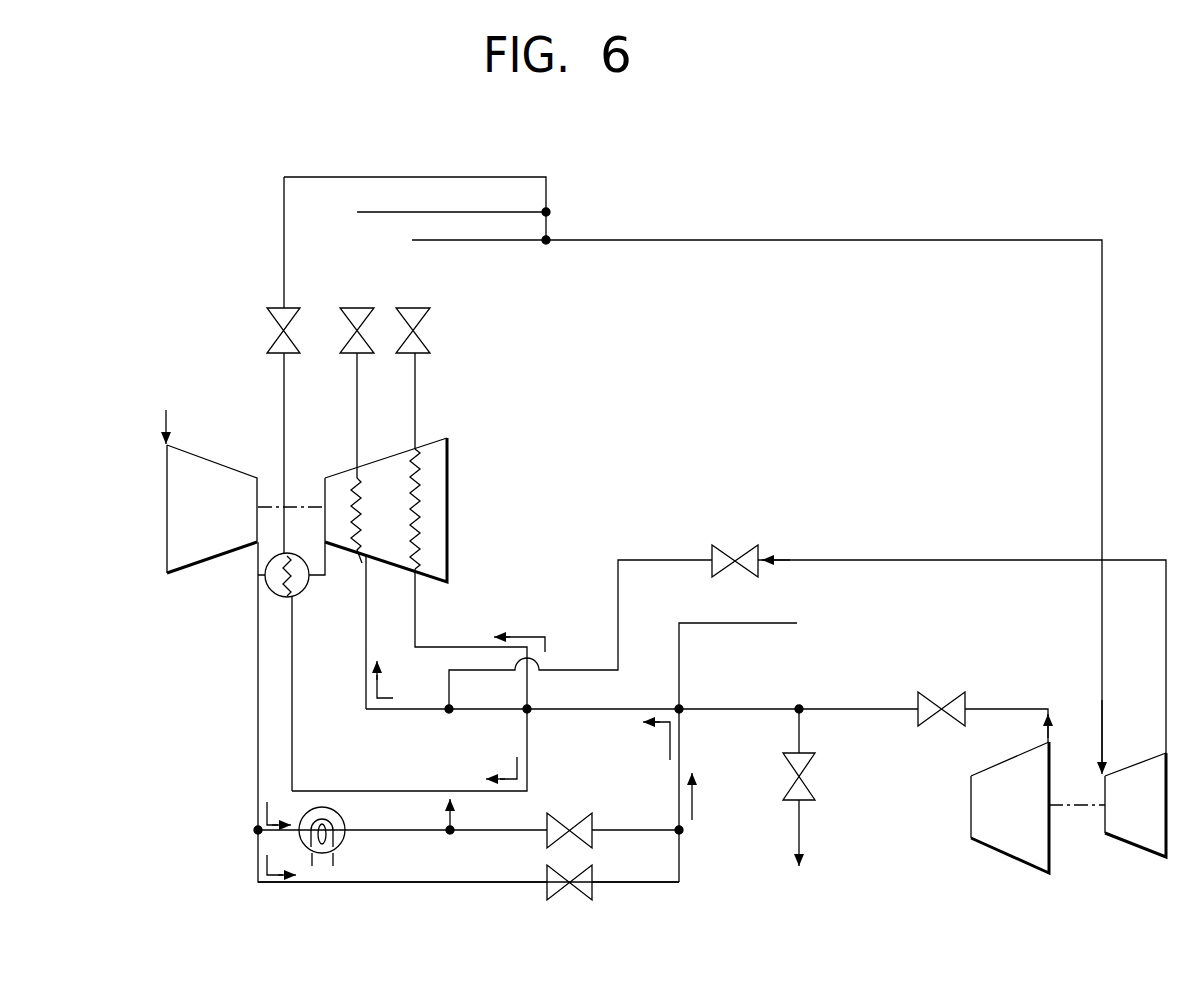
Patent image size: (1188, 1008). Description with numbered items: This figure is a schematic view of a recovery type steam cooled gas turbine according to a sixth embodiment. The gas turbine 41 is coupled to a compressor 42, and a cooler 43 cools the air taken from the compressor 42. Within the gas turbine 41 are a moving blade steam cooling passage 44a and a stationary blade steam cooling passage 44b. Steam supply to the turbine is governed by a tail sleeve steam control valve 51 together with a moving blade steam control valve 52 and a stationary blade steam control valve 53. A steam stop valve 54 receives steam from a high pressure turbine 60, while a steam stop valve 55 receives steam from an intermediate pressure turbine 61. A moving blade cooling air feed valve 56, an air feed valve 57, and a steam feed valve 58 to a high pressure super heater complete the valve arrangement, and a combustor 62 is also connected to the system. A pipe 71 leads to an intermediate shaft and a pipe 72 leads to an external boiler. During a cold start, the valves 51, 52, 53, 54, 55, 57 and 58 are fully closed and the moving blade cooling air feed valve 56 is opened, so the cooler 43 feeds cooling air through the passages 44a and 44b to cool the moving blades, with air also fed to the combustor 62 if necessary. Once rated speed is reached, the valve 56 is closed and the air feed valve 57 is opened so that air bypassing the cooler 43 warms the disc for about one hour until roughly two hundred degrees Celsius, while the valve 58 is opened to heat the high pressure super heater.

The gas turbine 41 is at (448, 540).
The compressor 42 is at (180, 573).
The cooler 43 is at (343, 842).
The moving blade steam cooling passage 44a is at (360, 512).
The stationary blade steam cooling passage 44b is at (415, 530).
The tail sleeve steam control valve 51 is at (266, 308).
The moving blade steam control valve 52 is at (430, 353).
The stationary blade steam control valve 53 is at (372, 308).
The steam stop valve from high pressure turbine 54 is at (965, 692).
The steam stop valve from intermediate pressure turbine 55 is at (758, 545).
The moving blade cooling air feed valve 56 is at (592, 813).
The air feed valve 57 is at (592, 865).
The steam feed valve to high pressure super heater 58 is at (815, 800).
The high pressure turbine 60 is at (1000, 850).
The intermediate pressure turbine 61 is at (1140, 845).
The combustor 62 is at (312, 582).
The pipe to intermediate shaft 71 is at (449, 812).
The pipe to external boiler 72 is at (733, 623).